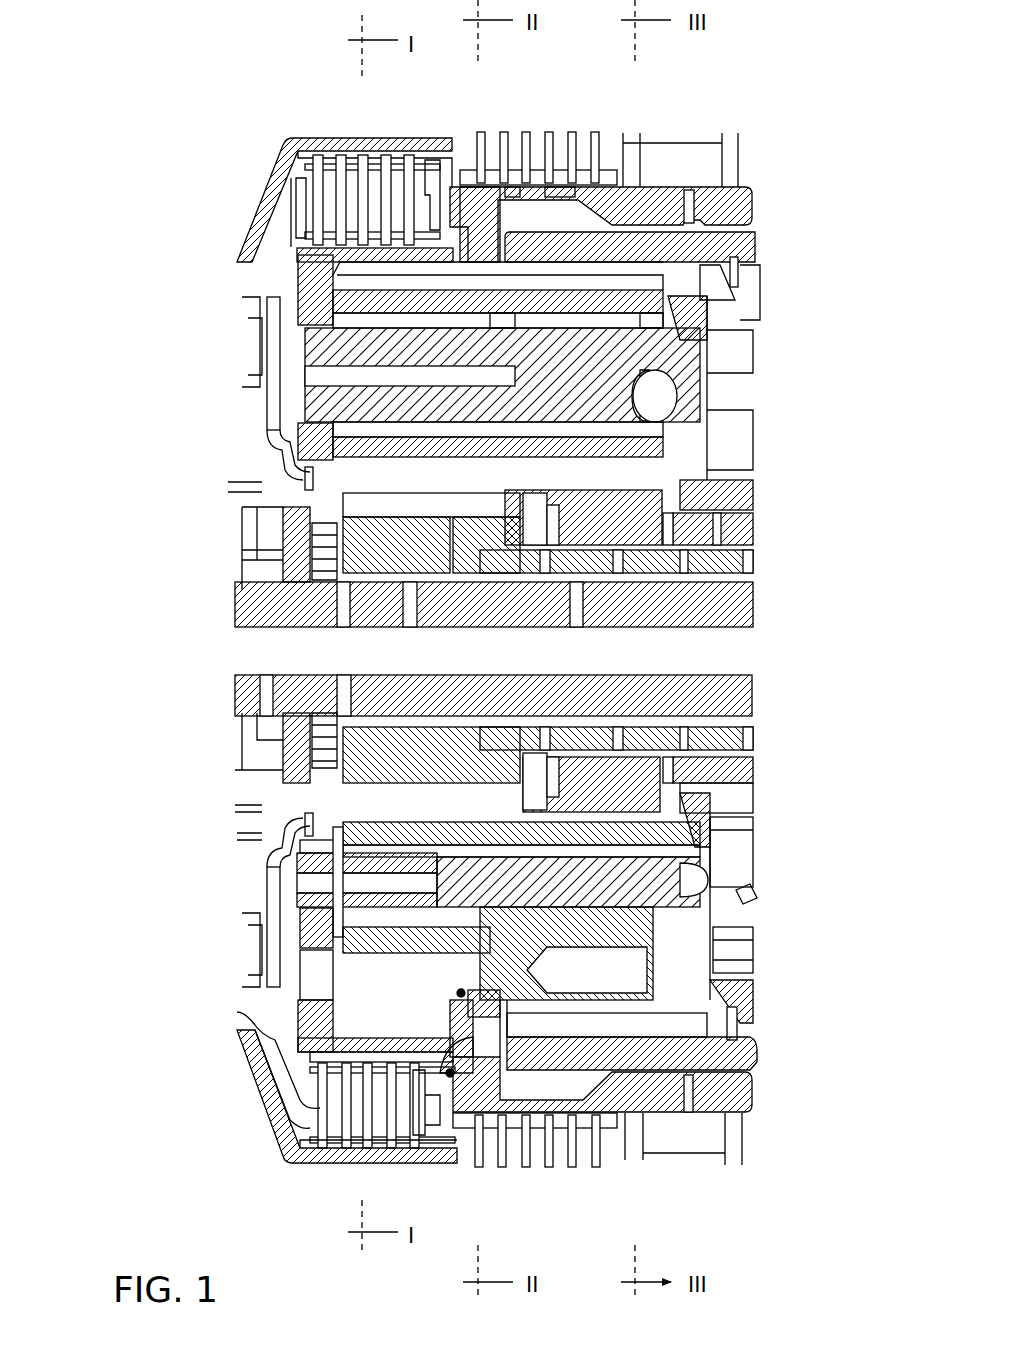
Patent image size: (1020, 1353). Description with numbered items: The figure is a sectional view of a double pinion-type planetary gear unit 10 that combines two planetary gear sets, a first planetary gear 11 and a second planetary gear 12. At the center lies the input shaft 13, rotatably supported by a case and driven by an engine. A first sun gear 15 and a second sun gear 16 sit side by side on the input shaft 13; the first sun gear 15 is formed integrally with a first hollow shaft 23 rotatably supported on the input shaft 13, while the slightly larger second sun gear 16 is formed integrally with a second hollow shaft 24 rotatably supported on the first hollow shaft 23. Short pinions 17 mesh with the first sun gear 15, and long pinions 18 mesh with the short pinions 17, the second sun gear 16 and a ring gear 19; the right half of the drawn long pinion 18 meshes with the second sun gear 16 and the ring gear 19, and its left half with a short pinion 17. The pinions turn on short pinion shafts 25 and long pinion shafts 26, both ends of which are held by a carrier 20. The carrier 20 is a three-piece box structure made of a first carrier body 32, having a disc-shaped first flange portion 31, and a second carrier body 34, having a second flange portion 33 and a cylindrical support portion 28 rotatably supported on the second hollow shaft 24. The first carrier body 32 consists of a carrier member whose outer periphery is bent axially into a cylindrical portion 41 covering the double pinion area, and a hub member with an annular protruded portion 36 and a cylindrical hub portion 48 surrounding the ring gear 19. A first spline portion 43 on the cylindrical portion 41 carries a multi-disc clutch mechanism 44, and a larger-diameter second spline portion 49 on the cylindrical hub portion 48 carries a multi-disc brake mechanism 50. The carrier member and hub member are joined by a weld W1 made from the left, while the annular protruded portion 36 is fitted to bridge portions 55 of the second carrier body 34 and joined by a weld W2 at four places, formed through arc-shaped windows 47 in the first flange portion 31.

The double pinion-type planetary gear unit 10 is at (602, 106).
The first planetary gear 11 is at (290, 300).
The second planetary gear 12 is at (735, 320).
The input shaft 13 is at (258, 615).
The first sun gear 15 is at (377, 548).
The second sun gear 16 is at (700, 823).
The short pinions 17 is at (458, 993).
The long pinions 18 is at (623, 310).
The ring gear 19 is at (745, 210).
The carrier 20 is at (758, 1090).
The first hollow shaft 23 is at (717, 565).
The second hollow shaft 24 is at (740, 528).
The short pinion shafts 25 is at (660, 887).
The long pinion shafts 26 is at (650, 355).
The cylindrical support portion 28 is at (745, 497).
The first flange portion 31 is at (318, 317).
The first carrier body 32 is at (292, 247).
The second flange portion 33 is at (700, 250).
The second carrier body 34 is at (702, 907).
The annular protruded portion 36 is at (427, 1075).
The cylindrical portion 41 is at (385, 1070).
The first spline portion 43 is at (413, 233).
The multi-disc clutch mechanism 44 is at (348, 134).
The arc-shaped windows 47 is at (318, 978).
The cylindrical hub portion 48 is at (655, 1115).
The second spline portion 49 is at (558, 170).
The multi-disc brake mechanism 50 is at (533, 108).
The bridge portions 55 is at (510, 1118).
The weld W1 is at (450, 1078).
The weld W2 is at (388, 1060).